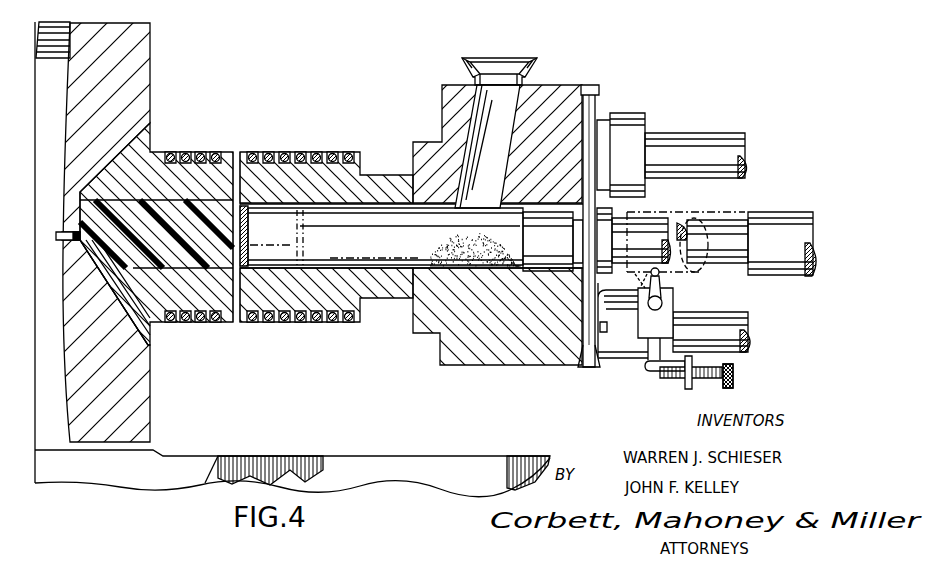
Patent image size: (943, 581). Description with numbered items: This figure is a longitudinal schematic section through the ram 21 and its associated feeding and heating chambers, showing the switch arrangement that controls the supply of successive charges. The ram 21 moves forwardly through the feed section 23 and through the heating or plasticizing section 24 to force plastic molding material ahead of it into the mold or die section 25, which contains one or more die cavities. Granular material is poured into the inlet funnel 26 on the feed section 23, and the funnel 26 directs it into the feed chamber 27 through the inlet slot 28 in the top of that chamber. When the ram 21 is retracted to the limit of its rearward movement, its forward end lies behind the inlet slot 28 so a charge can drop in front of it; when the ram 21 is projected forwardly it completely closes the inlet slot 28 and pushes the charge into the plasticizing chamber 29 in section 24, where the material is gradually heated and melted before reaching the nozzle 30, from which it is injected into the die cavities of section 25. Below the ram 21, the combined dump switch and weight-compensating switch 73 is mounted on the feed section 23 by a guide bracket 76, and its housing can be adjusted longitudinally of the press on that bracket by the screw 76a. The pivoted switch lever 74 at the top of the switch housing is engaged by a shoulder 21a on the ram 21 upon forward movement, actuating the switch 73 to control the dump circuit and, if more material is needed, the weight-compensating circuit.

The ram 21 is at (642, 228).
The shoulder 21a is at (755, 275).
The feed section 23 is at (442, 92).
The heating or plasticizing section 24 is at (207, 177).
The mold or die section 25 is at (145, 105).
The inlet funnel 26 is at (523, 60).
The feed chamber 27 is at (448, 225).
The inlet slot 28 is at (482, 152).
The plasticizing chamber 29 is at (265, 253).
The nozzle 30 is at (150, 323).
The combined dump switch and weight-compensating switch 73 is at (642, 322).
The switch lever 74 is at (662, 282).
The guide bracket 76 is at (633, 360).
The screw 76a is at (708, 378).